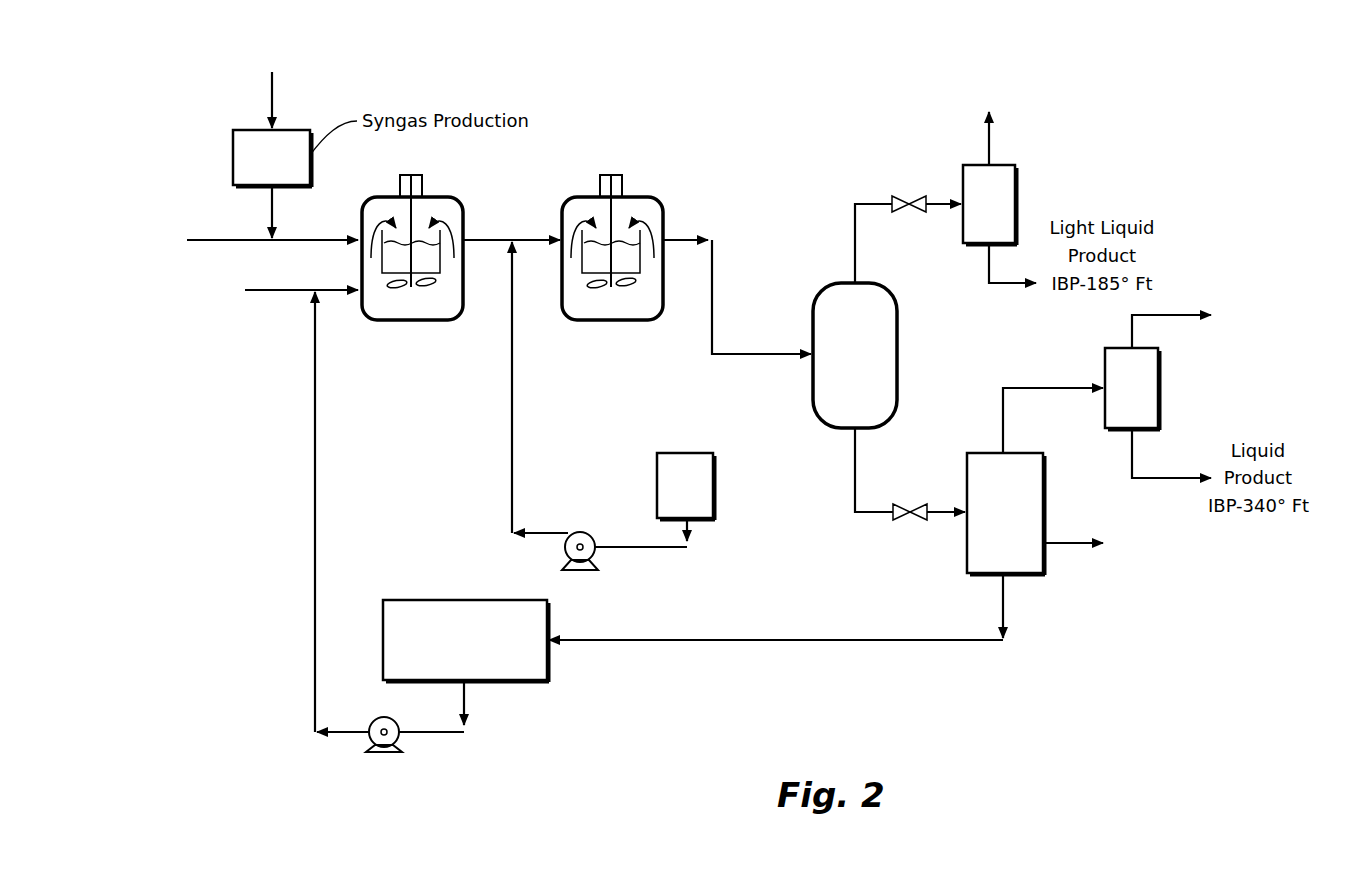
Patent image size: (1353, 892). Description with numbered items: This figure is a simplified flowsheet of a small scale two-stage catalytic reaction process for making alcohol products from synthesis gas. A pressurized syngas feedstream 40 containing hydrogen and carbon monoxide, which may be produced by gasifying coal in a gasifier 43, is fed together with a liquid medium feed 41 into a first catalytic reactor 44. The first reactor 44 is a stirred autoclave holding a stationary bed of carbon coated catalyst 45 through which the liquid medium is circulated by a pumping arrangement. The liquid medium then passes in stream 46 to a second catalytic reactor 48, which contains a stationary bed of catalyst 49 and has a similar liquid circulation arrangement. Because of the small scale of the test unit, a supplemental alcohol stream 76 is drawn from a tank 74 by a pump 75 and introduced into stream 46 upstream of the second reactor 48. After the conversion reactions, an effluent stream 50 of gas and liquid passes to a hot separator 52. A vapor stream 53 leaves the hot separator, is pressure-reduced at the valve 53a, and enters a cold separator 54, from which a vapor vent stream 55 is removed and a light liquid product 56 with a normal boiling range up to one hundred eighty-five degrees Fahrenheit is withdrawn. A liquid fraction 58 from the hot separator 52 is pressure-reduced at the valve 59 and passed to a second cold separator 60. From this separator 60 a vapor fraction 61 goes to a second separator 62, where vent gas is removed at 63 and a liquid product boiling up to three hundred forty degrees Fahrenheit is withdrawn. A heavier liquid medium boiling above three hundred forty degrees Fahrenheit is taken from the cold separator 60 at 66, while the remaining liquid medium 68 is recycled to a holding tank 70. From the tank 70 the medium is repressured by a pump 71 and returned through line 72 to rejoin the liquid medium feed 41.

The syngas feedstream 40 is at (220, 240).
The liquid medium feed 41 is at (283, 290).
The gasifier 43 is at (270, 90).
The first catalytic reactor 44 is at (437, 205).
The stationary bed of carbon coated catalyst 45 is at (440, 265).
The liquid medium stream to second reactor 46 is at (490, 240).
The second catalytic reactor 48 is at (637, 202).
The stationary bed of catalyst 49 is at (633, 265).
The effluent stream 50 is at (712, 300).
The hot separator 52 is at (855, 355).
The vapor stream 53 is at (855, 242).
The pressure-reducing valve 53a is at (910, 197).
The cold separator 54 is at (990, 205).
The vapor vent stream 55 is at (989, 142).
The light liquid product 56 is at (989, 266).
The liquid fraction 58 is at (855, 462).
The pressure-reducing valve 59 is at (910, 505).
The cold separator 60 is at (1178, 478).
The vapor fraction 61 is at (1057, 388).
The second separator 62 is at (1132, 389).
The vent gas outlet 63 is at (1132, 333).
The heavy liquid medium withdrawal 66 is at (1068, 547).
The remaining liquid medium 68 is at (790, 640).
The holding tank 70 is at (466, 662).
The pump 71 is at (397, 740).
The recycle line 72 is at (315, 468).
The tank 74 is at (686, 497).
The pump 75 is at (580, 532).
The supplemental alcohol stream 76 is at (512, 420).